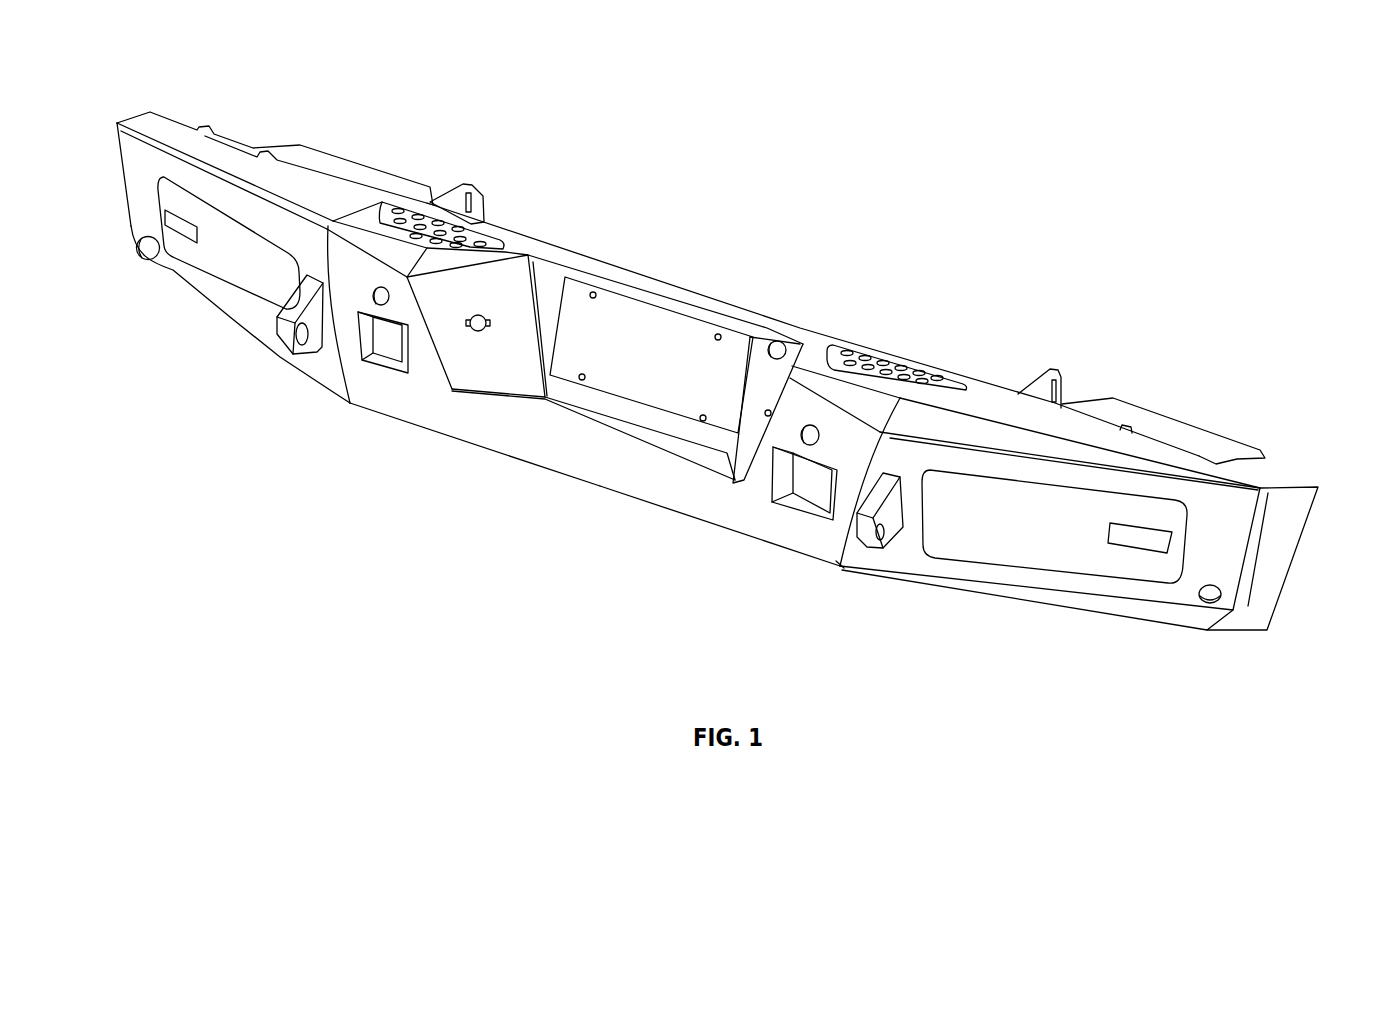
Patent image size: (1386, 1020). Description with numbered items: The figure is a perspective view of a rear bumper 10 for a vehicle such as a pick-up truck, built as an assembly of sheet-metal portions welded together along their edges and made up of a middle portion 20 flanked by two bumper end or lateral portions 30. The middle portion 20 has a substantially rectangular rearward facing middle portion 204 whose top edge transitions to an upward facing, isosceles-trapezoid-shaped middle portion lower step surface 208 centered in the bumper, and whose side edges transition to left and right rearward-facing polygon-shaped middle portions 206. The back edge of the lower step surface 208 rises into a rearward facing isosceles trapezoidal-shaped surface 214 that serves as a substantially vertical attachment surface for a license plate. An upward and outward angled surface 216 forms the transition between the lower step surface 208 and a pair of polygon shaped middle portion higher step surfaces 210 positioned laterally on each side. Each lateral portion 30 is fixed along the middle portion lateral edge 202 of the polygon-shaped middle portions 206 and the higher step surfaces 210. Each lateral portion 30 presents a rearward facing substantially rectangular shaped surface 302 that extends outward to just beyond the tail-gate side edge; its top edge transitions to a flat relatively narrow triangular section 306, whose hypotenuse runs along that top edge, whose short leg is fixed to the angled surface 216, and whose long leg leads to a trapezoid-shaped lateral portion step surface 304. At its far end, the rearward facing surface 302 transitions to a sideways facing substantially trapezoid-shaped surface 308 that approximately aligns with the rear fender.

The rear bumper 10 is at (1082, 285).
The middle portion 20 is at (804, 255).
The bumper end or lateral portion 30 is at (263, 378).
The middle portion lateral edge 202 is at (838, 566).
The rearward facing middle portion 204 is at (620, 484).
The rearward-facing polygon-shaped middle portion 206 is at (737, 523).
The middle portion lower step surface 208 is at (567, 417).
The middle portion higher step surface 210 is at (922, 380).
The rearward facing isosceles trapezoidal-shaped surface 214 is at (636, 318).
The upward and outward angled surface 216 is at (775, 388).
The rearward facing substantially rectangular shaped surface 302 is at (913, 567).
The lateral portion step surface 304 is at (1005, 401).
The flat relatively narrow triangular section 306 is at (1070, 453).
The sideways facing substantially trapezoid-shaped surface 308 is at (1282, 554).